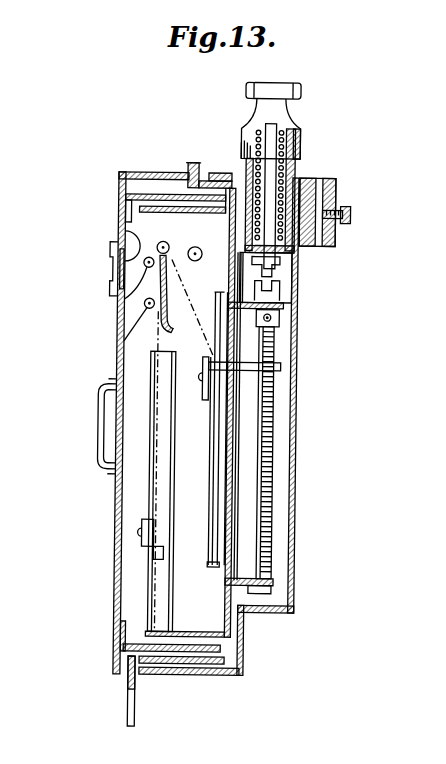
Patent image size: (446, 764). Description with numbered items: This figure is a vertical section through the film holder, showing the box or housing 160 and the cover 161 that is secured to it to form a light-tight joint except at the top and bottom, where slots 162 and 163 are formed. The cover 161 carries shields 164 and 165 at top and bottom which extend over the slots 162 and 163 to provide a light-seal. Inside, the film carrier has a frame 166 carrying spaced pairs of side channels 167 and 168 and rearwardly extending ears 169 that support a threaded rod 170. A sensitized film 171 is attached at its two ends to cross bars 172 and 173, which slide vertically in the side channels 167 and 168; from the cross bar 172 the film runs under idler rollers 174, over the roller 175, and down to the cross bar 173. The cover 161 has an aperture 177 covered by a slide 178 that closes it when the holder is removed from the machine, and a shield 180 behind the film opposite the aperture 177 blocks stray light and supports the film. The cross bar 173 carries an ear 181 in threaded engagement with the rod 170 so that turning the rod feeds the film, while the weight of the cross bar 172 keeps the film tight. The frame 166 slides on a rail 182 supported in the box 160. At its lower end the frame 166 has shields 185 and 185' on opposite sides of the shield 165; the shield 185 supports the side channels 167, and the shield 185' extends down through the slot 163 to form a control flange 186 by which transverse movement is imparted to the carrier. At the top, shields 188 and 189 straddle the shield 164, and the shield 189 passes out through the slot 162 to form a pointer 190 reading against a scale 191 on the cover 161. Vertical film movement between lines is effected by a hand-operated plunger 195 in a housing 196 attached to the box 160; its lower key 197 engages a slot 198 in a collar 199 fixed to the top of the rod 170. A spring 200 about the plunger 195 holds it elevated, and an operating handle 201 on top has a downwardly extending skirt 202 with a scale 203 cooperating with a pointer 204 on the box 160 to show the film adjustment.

The box or housing 160 is at (296, 497).
The cover 161 is at (116, 495).
The slot 162 is at (194, 166).
The slot 163 is at (130, 680).
The shield 164 is at (124, 197).
The shield 165 is at (121, 655).
The frame 166 is at (233, 622).
The side channels 167 is at (160, 605).
The side channels 168 is at (214, 536).
The ears 169 is at (270, 318).
The threaded rod 170 is at (268, 445).
The sensitized film 171 is at (196, 324).
The cross bar 172 is at (158, 527).
The cross bar 173 is at (206, 392).
The idler rollers 174 is at (123, 305).
The roller 175 is at (176, 244).
The aperture 177 is at (124, 245).
The slide 178 is at (110, 271).
The shield 180 is at (120, 350).
The ear 181 is at (280, 366).
The rail 182 is at (199, 250).
The shield 185 is at (174, 668).
The shield 185' is at (188, 703).
The control flange 186 is at (132, 705).
The shield 188 is at (150, 207).
The shield 189 is at (204, 183).
The pointer 190 is at (188, 165).
The scale 191 is at (162, 173).
The plunger 195 is at (288, 174).
The housing 196 is at (296, 255).
The key 197 is at (272, 272).
The slot 198 is at (268, 288).
The collar 199 is at (279, 324).
The spring 200 is at (284, 150).
The operating handle 201 is at (297, 92).
The skirt 202 is at (297, 128).
The scale 203 is at (240, 140).
The pointer 204 is at (221, 173).